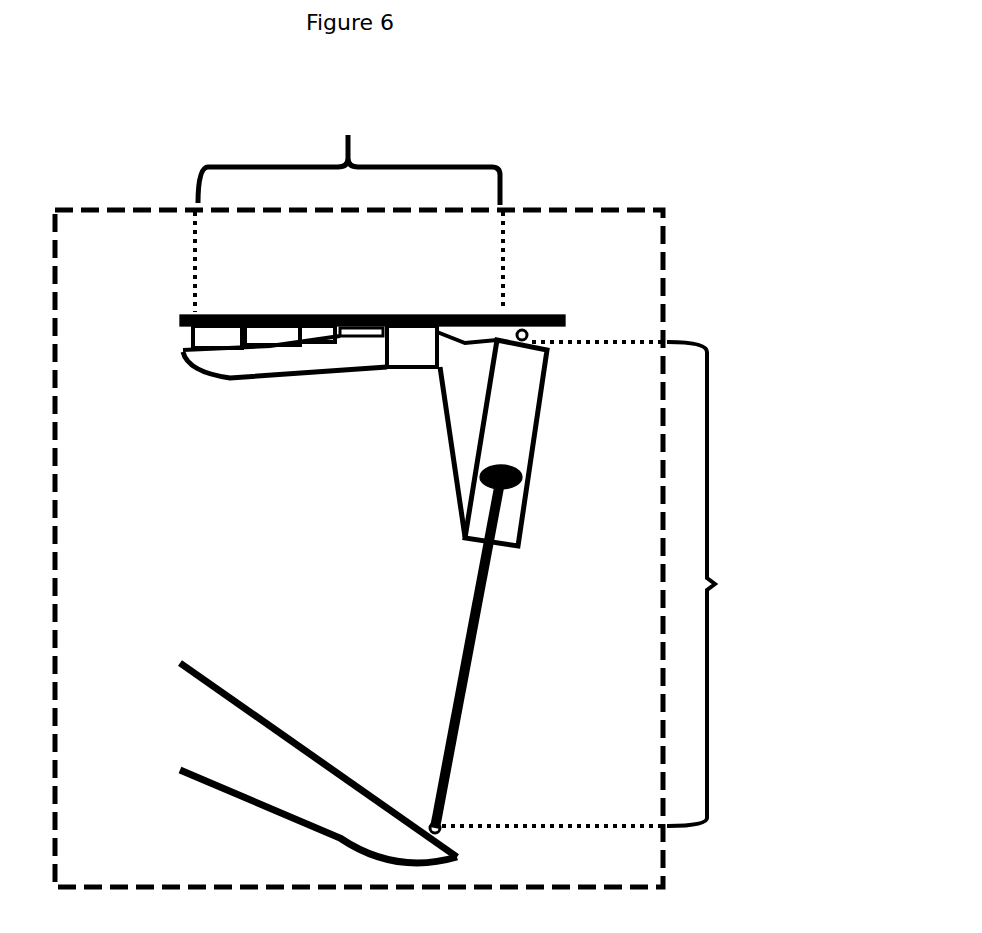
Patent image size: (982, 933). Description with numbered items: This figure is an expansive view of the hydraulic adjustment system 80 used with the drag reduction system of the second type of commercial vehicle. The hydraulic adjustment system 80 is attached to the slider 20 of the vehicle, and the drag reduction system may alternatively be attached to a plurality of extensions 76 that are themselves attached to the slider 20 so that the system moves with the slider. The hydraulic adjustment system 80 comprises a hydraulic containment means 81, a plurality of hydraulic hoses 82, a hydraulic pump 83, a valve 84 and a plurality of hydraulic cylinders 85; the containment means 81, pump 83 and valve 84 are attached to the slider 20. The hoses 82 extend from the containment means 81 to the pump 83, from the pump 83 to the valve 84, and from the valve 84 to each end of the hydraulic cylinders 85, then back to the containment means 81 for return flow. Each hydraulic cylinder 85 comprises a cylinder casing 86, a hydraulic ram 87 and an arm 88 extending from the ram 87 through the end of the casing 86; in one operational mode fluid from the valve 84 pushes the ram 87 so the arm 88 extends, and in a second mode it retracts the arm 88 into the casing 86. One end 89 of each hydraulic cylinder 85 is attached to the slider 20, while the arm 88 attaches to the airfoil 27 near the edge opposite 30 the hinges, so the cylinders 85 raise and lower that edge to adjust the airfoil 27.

The slider 20 is at (183, 326).
The airfoil 27 is at (318, 763).
The edge opposite the plurality of hinges 30 is at (464, 856).
The extension 76 is at (530, 316).
The hydraulic adjustment system 80 is at (349, 208).
The hydraulic containment means 81 is at (225, 332).
The hydraulic hoses 82 is at (462, 348).
The hydraulic pump 83 is at (316, 332).
The valve 84 is at (417, 332).
The hydraulic cylinder 85 is at (610, 584).
The cylinder casing 86 is at (460, 538).
The hydraulic ram 87 is at (528, 486).
The arm 88 is at (479, 667).
The end of the hydraulic cylinder 89 is at (550, 352).